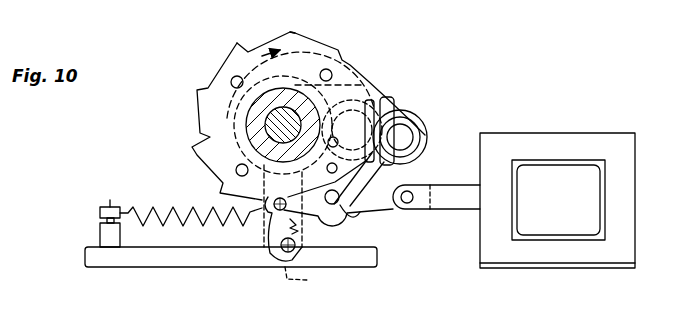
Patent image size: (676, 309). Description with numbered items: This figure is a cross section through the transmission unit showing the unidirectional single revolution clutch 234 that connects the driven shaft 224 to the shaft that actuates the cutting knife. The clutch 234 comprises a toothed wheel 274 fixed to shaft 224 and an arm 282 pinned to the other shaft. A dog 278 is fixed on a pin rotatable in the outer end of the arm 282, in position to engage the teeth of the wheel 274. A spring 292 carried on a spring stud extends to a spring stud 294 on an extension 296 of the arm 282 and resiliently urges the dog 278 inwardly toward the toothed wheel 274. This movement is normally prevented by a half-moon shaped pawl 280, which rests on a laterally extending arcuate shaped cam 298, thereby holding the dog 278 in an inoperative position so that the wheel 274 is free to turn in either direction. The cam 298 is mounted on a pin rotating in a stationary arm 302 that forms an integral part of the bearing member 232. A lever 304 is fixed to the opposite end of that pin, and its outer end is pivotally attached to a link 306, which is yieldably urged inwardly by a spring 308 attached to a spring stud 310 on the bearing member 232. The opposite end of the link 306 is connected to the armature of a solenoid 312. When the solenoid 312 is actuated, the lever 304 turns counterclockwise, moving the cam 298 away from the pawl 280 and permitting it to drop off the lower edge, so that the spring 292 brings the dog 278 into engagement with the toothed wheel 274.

The unidirectional single revolution clutch 234 is at (229, 46).
The shaft 224 is at (282, 127).
The toothed wheel 274 is at (296, 33).
The stationary arm 302 is at (348, 78).
The arm 282 is at (378, 82).
The half-moon shaped pawl 280 is at (398, 84).
The dog 278 is at (395, 99).
The arcuate shaped cam 298 is at (377, 137).
The link 306 is at (410, 184).
The lever 304 is at (370, 215).
The extension 296 is at (262, 224).
The spring 292 is at (305, 226).
The spring stud 294 is at (315, 280).
The bearing member 232 is at (198, 247).
The spring 308 is at (184, 211).
The spring stud 310 is at (108, 214).
The solenoid 312 is at (535, 148).